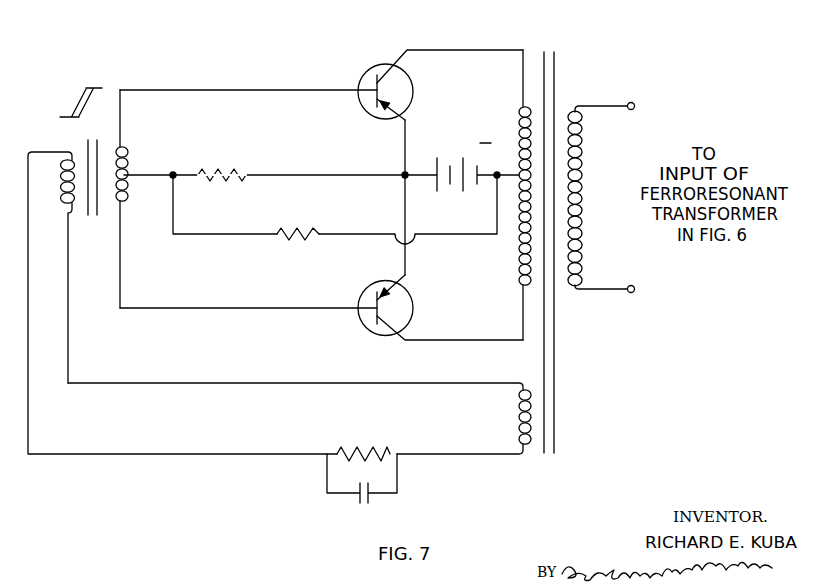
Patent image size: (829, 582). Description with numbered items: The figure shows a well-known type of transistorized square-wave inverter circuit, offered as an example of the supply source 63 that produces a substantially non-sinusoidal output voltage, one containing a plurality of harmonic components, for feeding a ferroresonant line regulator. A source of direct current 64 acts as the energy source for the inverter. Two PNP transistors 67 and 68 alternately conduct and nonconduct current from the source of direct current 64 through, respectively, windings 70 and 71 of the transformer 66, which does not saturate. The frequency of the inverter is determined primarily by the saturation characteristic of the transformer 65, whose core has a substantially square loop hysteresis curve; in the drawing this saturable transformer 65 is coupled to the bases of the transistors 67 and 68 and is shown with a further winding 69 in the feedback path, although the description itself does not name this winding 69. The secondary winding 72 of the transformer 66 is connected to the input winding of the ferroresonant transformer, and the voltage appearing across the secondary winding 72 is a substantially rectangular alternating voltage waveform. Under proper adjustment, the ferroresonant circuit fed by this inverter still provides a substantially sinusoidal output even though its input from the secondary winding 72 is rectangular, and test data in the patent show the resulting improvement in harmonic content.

The supply source 63 is at (321, 187).
The source of direct current 64 is at (441, 145).
The transformer 65 is at (78, 270).
The transformer 66 is at (543, 241).
The PNP transistor 67 is at (361, 68).
The PNP transistor 68 is at (362, 336).
The feedback winding 69 is at (518, 424).
The winding 70 is at (515, 127).
The winding 71 is at (513, 273).
The secondary winding 72 is at (585, 134).